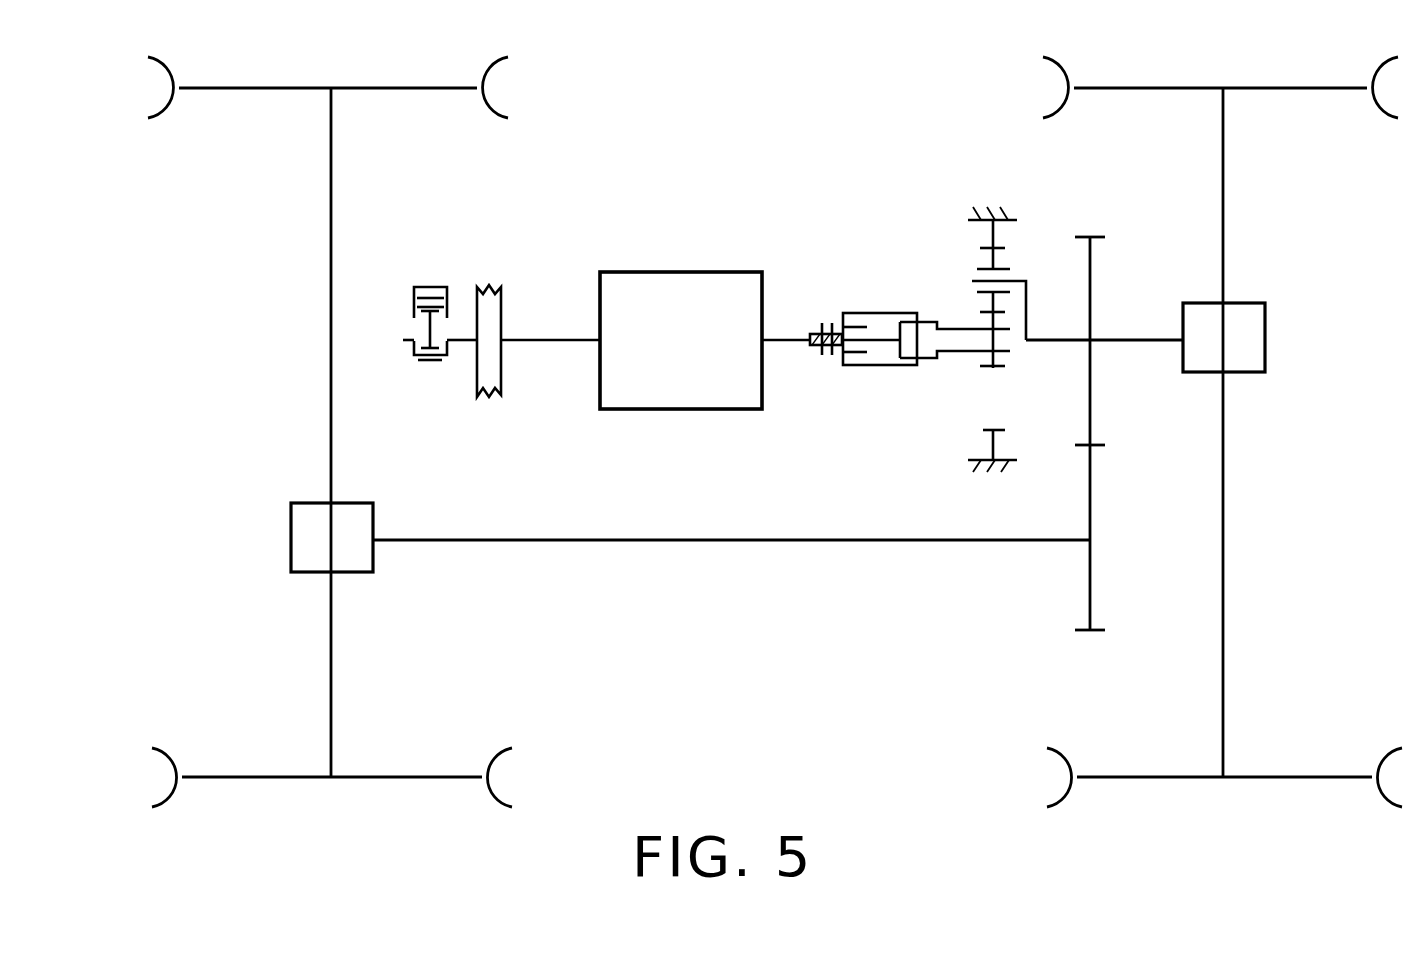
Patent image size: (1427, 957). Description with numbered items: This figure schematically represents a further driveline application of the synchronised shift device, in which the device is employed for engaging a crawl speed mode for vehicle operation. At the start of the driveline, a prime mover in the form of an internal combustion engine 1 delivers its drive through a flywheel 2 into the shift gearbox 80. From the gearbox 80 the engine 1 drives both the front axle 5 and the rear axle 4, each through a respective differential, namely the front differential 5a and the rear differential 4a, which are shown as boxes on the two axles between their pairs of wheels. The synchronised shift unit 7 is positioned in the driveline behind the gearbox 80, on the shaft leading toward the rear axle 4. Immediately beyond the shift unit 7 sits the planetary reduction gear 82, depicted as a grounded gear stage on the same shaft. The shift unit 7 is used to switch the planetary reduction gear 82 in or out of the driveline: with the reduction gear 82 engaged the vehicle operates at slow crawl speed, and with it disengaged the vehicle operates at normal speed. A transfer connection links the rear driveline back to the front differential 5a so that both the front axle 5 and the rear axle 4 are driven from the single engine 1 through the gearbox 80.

The internal combustion engine 1 is at (422, 285).
The flywheel 2 is at (487, 285).
The shift gearbox 80 is at (655, 270).
The synchronised shift unit 7 is at (867, 313).
The planetary reduction gear 82 is at (950, 242).
The rear axle 4 is at (1228, 562).
The rear differential 4a is at (1265, 345).
The front axle 5 is at (331, 380).
The front differential 5a is at (291, 528).